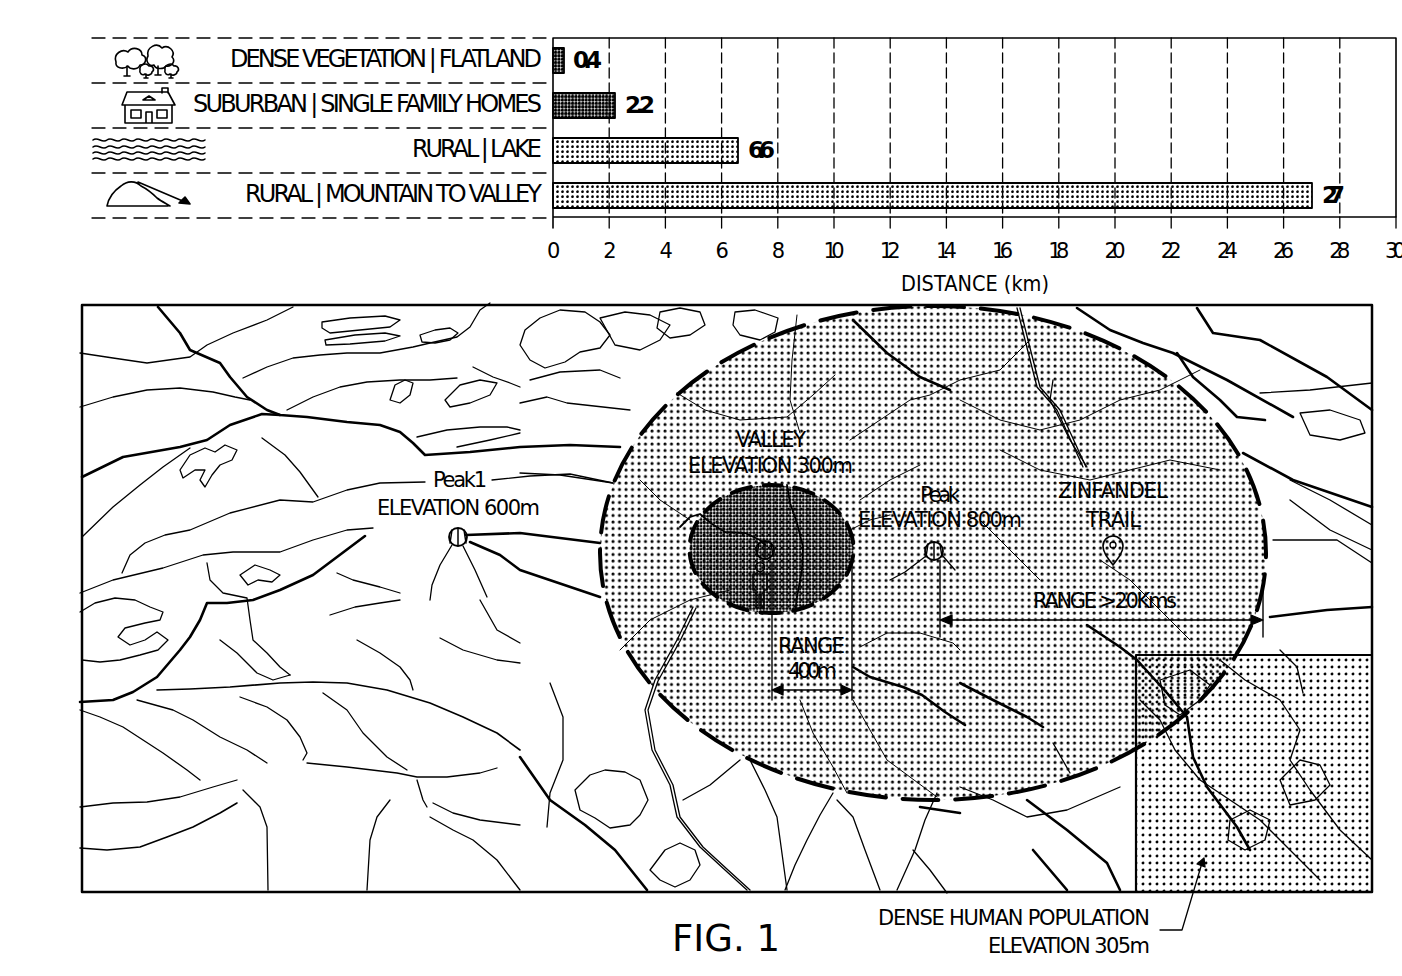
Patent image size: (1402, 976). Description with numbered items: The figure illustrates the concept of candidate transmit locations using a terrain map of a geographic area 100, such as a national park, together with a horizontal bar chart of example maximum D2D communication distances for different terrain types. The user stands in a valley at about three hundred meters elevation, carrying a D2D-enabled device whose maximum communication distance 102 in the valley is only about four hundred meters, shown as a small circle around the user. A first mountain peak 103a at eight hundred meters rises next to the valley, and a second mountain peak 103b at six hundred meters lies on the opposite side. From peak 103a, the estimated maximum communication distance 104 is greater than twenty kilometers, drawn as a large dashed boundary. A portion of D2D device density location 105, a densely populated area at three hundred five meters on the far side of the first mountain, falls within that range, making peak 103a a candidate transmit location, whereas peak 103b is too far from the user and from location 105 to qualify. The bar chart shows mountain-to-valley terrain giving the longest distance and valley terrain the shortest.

The geographic area map 100 is at (416, 892).
The maximum communication distance 102 is at (731, 614).
The first mountain peak 103a is at (930, 562).
The second mountain peak 103b is at (449, 540).
The maximum communication distance 104 is at (612, 627).
The D2D device density location 105 is at (1253, 886).